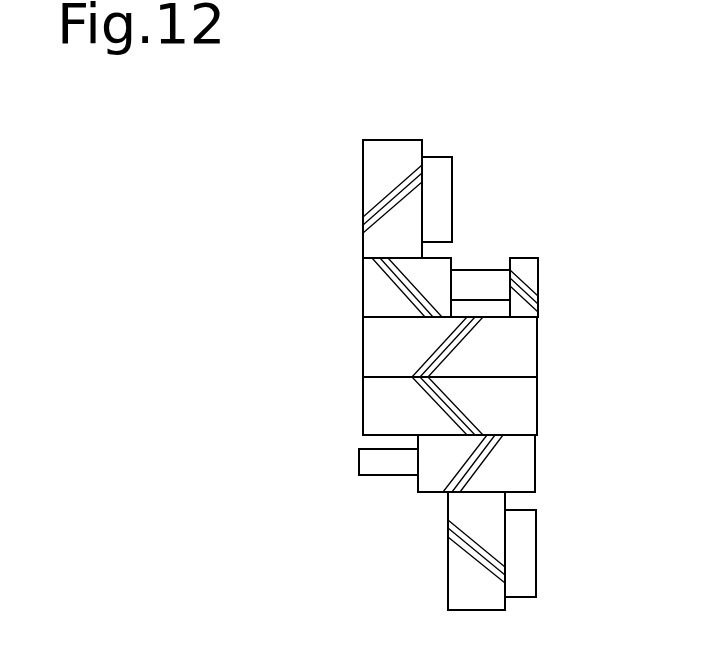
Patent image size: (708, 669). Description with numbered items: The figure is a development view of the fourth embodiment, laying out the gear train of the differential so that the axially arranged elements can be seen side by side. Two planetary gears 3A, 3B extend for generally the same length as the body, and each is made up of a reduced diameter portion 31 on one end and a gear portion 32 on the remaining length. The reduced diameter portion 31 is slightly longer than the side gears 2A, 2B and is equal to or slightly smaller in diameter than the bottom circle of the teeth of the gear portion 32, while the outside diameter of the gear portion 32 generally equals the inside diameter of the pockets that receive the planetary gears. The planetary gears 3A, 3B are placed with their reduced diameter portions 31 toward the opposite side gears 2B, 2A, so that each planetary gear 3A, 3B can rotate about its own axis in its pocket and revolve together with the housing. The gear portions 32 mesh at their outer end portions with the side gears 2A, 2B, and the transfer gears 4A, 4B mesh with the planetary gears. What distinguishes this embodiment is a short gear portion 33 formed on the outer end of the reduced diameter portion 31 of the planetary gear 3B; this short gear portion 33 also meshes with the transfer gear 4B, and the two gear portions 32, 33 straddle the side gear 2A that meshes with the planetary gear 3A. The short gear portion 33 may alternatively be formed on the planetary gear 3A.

The side gear 2A is at (475, 610).
The side gear 2B is at (400, 140).
The reduced diameter portion 31 is at (483, 270).
The gear portion 32 is at (380, 297).
The short gear portion 33 is at (538, 273).
The planetary gear 3A is at (537, 460).
The planetary gear 3B is at (363, 273).
The transfer gear 4A is at (363, 403).
The transfer gear 4B is at (363, 347).